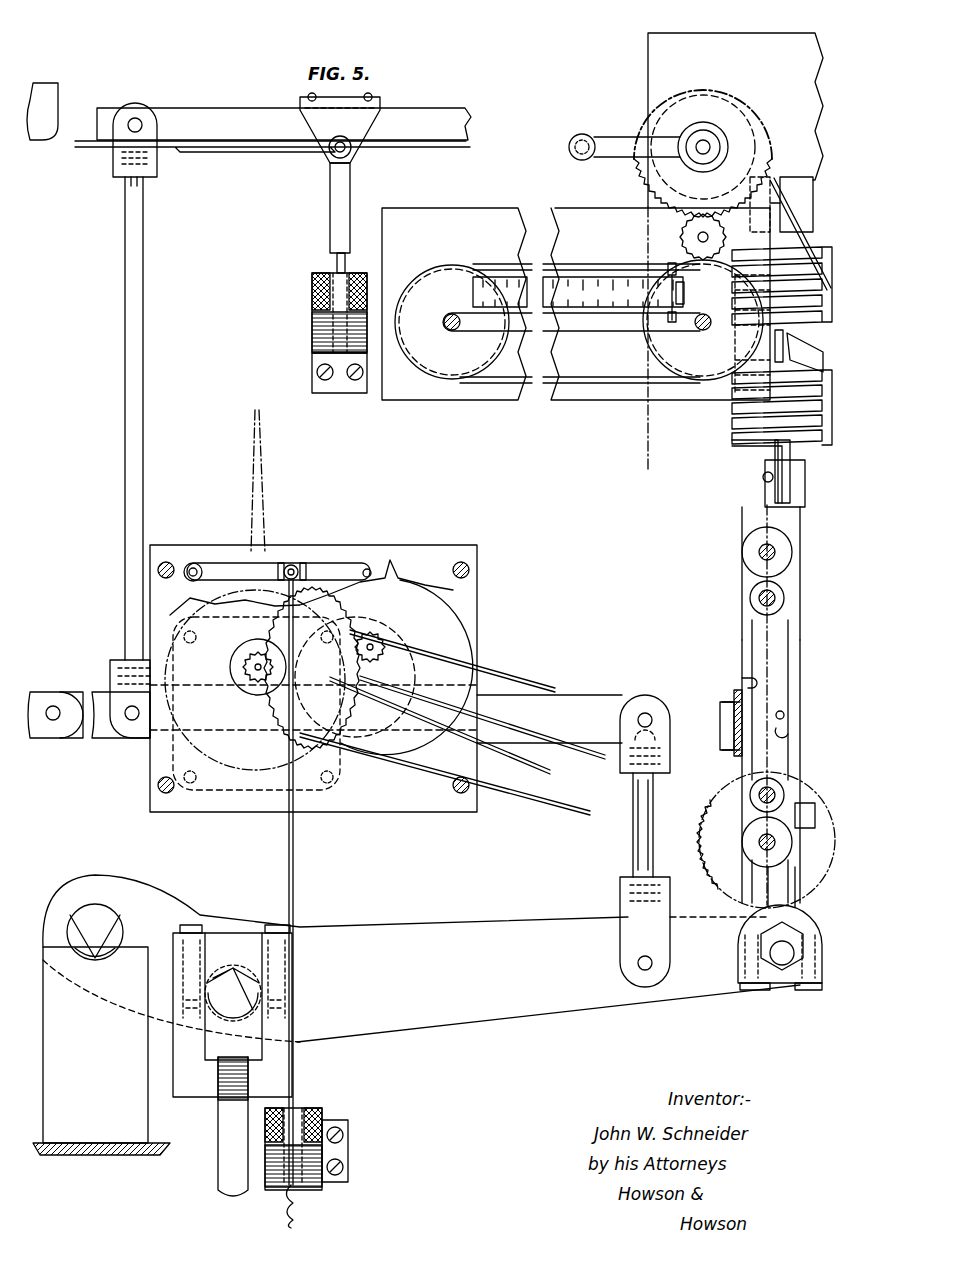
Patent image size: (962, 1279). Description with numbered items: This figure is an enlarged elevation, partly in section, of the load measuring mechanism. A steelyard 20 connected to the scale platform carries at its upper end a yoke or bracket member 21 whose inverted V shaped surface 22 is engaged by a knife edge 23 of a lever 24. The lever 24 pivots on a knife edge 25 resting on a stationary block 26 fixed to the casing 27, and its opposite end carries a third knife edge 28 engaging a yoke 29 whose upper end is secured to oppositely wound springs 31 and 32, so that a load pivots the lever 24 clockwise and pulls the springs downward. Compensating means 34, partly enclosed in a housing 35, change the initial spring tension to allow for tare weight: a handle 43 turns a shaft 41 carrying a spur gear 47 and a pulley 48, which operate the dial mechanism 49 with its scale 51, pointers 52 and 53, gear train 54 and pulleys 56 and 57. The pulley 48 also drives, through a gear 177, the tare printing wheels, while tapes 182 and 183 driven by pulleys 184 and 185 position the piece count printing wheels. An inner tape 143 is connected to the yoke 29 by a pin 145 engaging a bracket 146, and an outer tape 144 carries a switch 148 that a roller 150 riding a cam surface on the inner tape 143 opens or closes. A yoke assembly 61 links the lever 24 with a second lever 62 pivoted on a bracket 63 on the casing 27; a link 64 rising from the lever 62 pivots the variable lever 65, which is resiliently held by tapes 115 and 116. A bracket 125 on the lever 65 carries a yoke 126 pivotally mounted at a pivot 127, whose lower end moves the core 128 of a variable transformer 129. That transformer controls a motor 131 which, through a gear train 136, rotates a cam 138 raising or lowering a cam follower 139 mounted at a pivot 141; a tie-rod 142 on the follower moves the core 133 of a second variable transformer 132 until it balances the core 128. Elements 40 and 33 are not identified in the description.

The gear 177 is at (62, 102).
The variable lever 65 is at (213, 108).
The tape 116 is at (436, 150).
The tape 115 is at (82, 145).
The link 64 is at (125, 362).
The bracket 125 is at (382, 108).
The pivot 127 is at (352, 147).
The yoke 126 is at (330, 190).
The core 128 is at (312, 295).
The variable transformer 129 is at (312, 328).
The housing 35 is at (660, 42).
The compensating means 34 is at (668, 68).
The pulley 48 is at (737, 108).
The shaft 41 is at (706, 147).
The handle 43 is at (622, 152).
The link 40 is at (805, 192).
The spur gear 47 is at (658, 208).
The gear train 54 is at (726, 240).
The pointer 52 is at (672, 263).
The dial mechanism 49 is at (452, 372).
The pulley 56 is at (441, 275).
The scale 51 is at (598, 306).
The pointer 53 is at (675, 322).
The pulley 57 is at (706, 372).
The spring 32 is at (792, 333).
The spring 31 is at (735, 442).
The pivot bracket 33 is at (762, 478).
The outer tape 144 is at (746, 596).
The inner tape 143 is at (752, 651).
The roller 150 is at (742, 681).
The switch 148 is at (722, 720).
The pin 145 is at (784, 714).
The bracket 146 is at (789, 735).
The yoke 29 is at (760, 905).
The third knife edge 28 is at (782, 966).
The lever 24 is at (462, 979).
The knife edge 25 is at (98, 960).
The stationary block 26 is at (108, 1074).
The casing 27 is at (80, 1152).
The yoke or bracket member 21 is at (293, 1027).
The inverted V shaped surface 22 is at (225, 975).
The knife edge 23 is at (240, 964).
The steelyard 20 is at (218, 1171).
The second variable transformer 132 is at (323, 1118).
The core 133 is at (348, 1140).
The tie-rod 142 is at (295, 877).
The motor 131 is at (235, 798).
The pivot 141 is at (195, 563).
The cam follower 139 is at (340, 563).
The cam 138 is at (405, 578).
The gear train 136 is at (370, 755).
The pulley 184 is at (246, 681).
The pulley 185 is at (406, 662).
The tape 183 is at (525, 676).
The tape 182 is at (527, 799).
The second lever 62 is at (592, 696).
The yoke assembly 61 is at (633, 849).
The bracket 63 is at (42, 700).